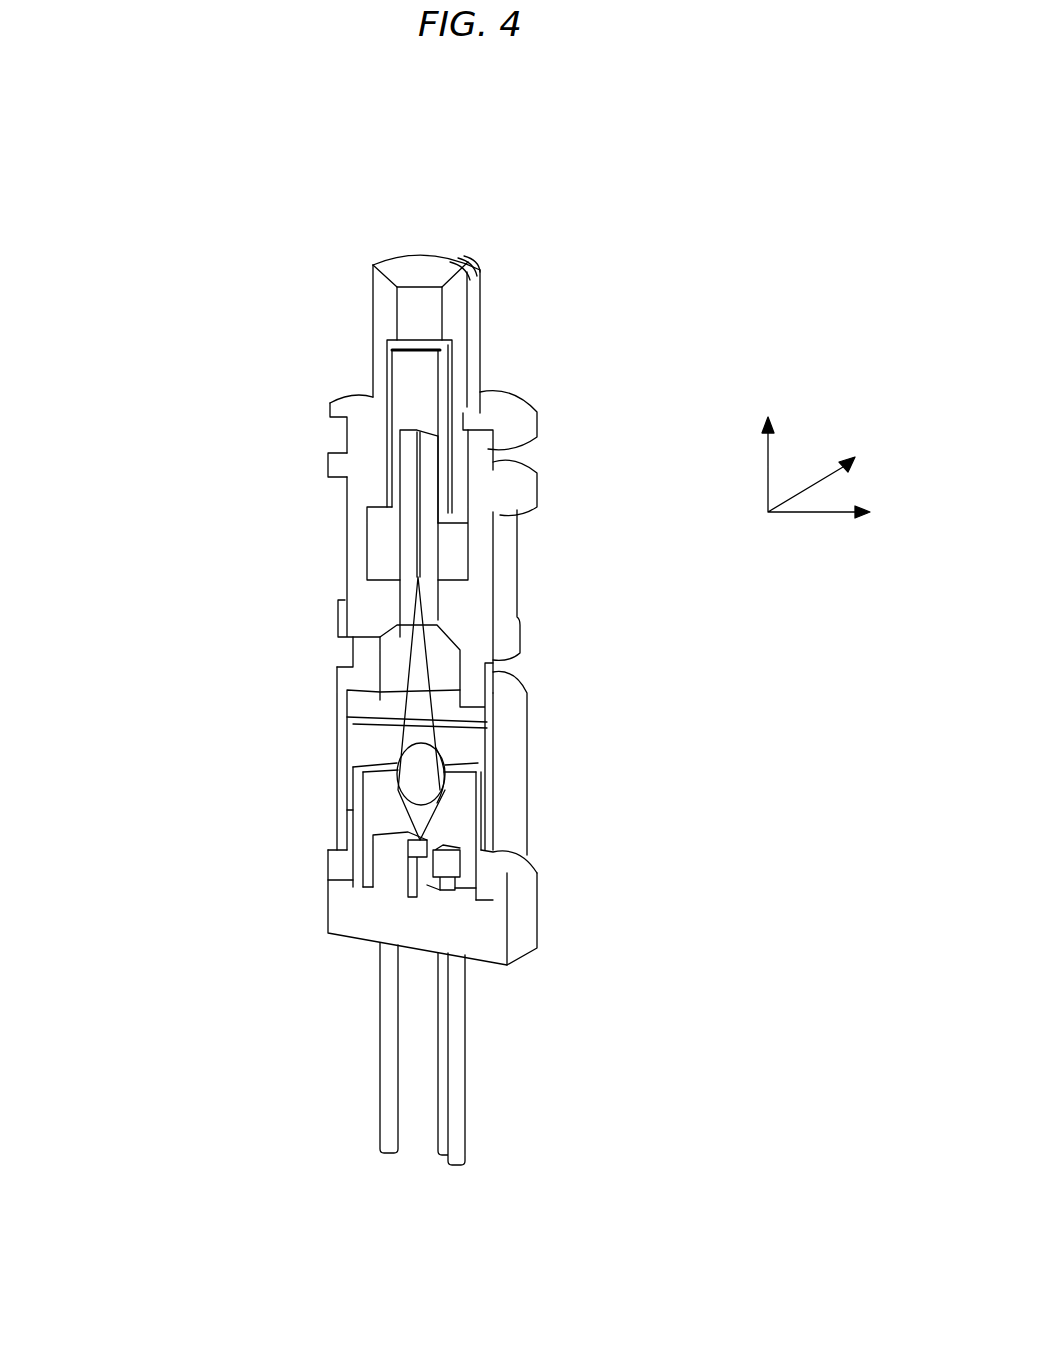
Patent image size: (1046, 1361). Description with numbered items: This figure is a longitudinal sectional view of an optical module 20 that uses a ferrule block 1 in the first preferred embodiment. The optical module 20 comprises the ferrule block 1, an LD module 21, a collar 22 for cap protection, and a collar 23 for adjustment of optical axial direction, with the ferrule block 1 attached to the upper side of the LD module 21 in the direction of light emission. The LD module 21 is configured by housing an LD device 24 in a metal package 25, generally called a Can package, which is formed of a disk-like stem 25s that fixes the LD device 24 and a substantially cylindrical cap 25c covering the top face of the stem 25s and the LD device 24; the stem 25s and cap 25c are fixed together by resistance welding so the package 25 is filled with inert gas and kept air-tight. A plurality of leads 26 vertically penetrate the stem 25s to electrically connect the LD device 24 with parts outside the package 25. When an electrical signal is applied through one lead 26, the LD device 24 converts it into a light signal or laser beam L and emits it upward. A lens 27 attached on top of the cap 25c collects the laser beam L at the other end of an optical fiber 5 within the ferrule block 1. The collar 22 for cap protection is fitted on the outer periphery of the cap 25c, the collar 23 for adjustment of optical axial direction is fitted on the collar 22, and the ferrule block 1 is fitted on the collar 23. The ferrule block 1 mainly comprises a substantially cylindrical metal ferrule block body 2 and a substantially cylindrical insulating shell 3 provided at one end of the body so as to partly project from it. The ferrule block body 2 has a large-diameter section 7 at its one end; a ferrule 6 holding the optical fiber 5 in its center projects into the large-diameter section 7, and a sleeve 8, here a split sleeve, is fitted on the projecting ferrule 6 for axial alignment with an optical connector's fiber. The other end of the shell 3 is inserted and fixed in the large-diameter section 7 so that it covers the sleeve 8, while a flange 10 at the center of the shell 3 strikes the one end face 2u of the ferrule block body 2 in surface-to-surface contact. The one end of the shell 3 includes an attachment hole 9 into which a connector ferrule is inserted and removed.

The optical module 20 is at (640, 264).
The ferrule block 1 is at (196, 671).
The shell 3 is at (480, 318).
The attachment hole 9 is at (434, 270).
The sleeve 8 is at (445, 365).
The ferrule 6 is at (407, 463).
The large-diameter section 7 is at (375, 493).
The optical fiber 5 is at (418, 577).
The flange 10 is at (500, 392).
The one end face (tip face) 2u is at (518, 437).
The ferrule block body 2 is at (515, 540).
The LD module 21 is at (200, 1162).
The collar for adjustment of optical axial direction 23 is at (523, 695).
The lens 27 is at (410, 757).
The light signal (laser beam) L is at (432, 818).
The cap 25c is at (480, 855).
The LD device 24 is at (412, 843).
The collar for cap protection 22 is at (530, 873).
The stem 25s is at (538, 945).
The package 25 is at (524, 957).
The lead 26 is at (465, 1117).